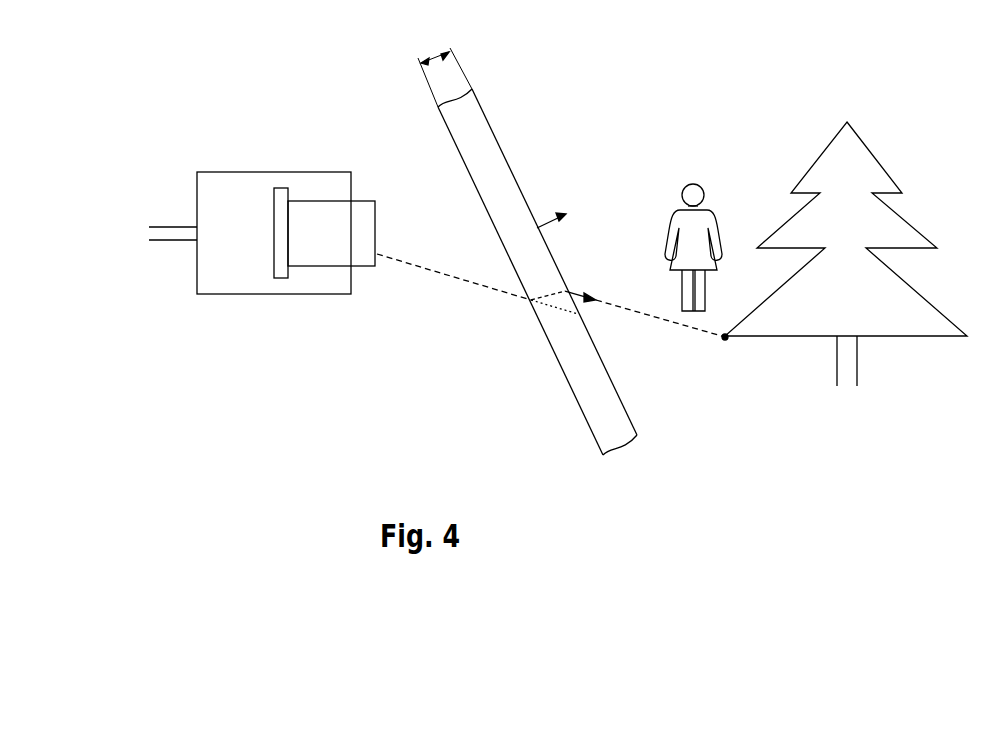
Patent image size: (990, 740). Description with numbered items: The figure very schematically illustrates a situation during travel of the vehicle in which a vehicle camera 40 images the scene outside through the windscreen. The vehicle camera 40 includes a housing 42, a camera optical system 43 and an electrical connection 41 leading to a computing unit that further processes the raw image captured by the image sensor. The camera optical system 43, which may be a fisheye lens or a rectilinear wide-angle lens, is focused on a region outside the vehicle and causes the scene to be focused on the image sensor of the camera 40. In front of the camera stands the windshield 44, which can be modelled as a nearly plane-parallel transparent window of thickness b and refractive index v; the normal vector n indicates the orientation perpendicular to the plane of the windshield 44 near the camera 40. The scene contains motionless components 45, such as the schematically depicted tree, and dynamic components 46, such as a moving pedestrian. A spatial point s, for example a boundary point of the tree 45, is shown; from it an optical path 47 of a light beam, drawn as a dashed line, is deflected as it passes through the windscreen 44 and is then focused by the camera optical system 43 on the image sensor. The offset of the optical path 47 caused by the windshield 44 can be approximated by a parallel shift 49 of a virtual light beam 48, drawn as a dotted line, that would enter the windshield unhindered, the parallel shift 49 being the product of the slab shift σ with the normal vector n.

The vehicle camera 40 is at (272, 153).
The electrical connection 41 is at (161, 243).
The housing 42 is at (233, 267).
The camera optical system 43 is at (326, 268).
The windshield 44 is at (483, 150).
The motionless components 45 is at (858, 362).
The dynamic components 46 is at (668, 262).
The optical path 47 is at (673, 325).
The virtual light beam 48 is at (552, 308).
The parallel shift 49 is at (577, 306).